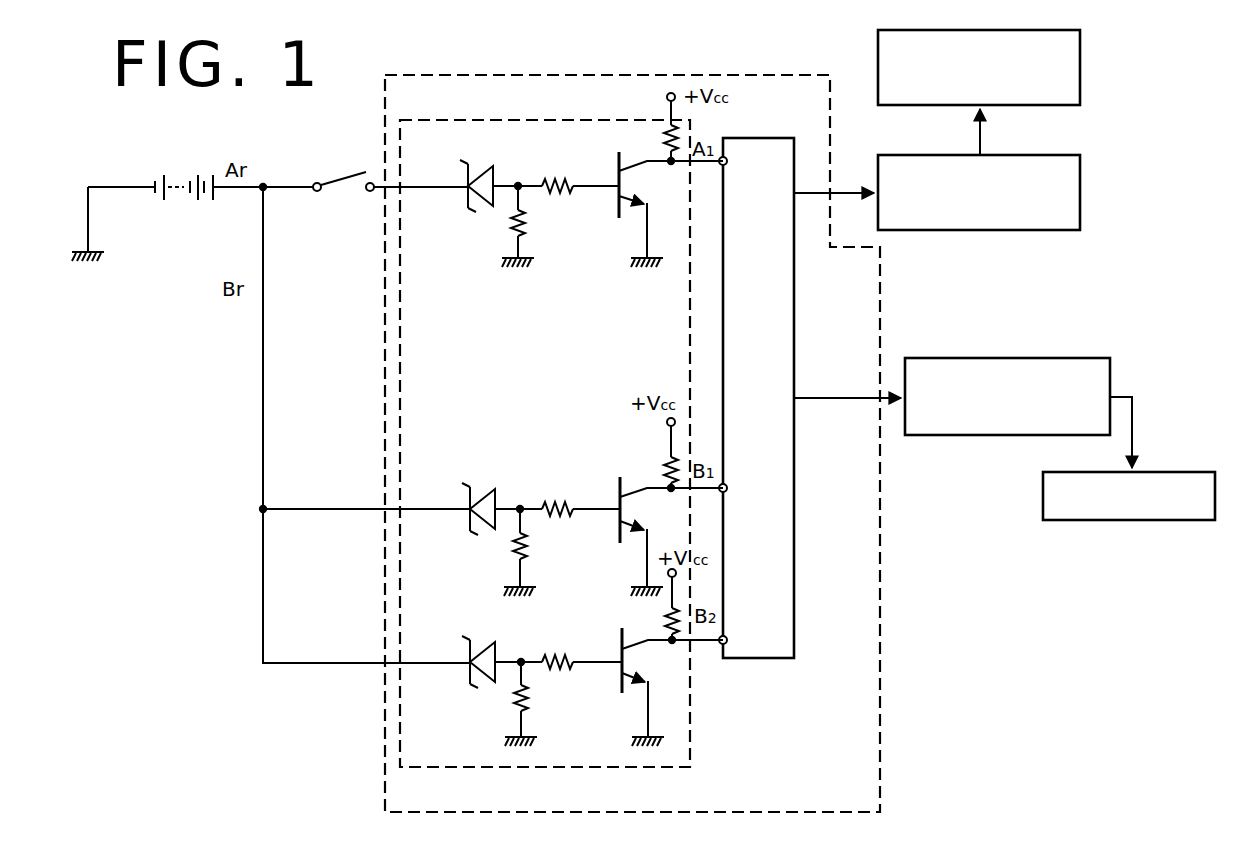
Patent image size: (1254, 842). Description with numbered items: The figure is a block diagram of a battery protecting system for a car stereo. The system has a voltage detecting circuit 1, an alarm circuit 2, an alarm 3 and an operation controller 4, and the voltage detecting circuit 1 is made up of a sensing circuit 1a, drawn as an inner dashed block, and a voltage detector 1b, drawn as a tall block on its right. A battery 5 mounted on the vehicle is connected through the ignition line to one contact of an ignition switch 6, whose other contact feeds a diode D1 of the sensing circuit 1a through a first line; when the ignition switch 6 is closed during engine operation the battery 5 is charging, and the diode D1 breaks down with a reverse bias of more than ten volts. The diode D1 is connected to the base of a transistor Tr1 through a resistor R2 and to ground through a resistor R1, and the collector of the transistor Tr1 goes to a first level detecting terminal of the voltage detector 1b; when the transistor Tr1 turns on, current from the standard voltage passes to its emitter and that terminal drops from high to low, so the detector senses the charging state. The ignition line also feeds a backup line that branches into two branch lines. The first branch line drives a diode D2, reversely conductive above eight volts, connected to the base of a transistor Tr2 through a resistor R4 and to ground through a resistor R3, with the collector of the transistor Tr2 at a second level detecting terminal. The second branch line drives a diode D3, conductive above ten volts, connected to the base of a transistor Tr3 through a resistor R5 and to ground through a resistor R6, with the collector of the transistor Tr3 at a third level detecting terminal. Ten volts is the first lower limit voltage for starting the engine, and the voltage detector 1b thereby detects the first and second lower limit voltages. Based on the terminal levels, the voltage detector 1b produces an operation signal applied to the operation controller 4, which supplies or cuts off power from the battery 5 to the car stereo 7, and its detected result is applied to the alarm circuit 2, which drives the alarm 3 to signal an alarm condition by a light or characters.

The voltage detecting circuit 1 is at (585, 74).
The sensing circuit 1a is at (562, 118).
The voltage detector 1b is at (745, 138).
The alarm circuit 2 is at (1080, 193).
The alarm 3 is at (1080, 72).
The operation controller 4 is at (1062, 358).
The battery 5 is at (176, 181).
The ignition switch 6 is at (330, 179).
The car stereo 7 is at (1190, 472).
The diode D1 is at (480, 171).
The diode D2 is at (481, 494).
The diode D3 is at (481, 649).
The resistor R1 is at (536, 222).
The resistor R2 is at (557, 170).
The resistor R3 is at (537, 548).
The resistor R4 is at (557, 491).
The resistor R5 is at (540, 699).
The resistor R6 is at (557, 646).
The transistor Tr1 is at (664, 192).
The transistor Tr2 is at (663, 520).
The transistor Tr3 is at (663, 674).